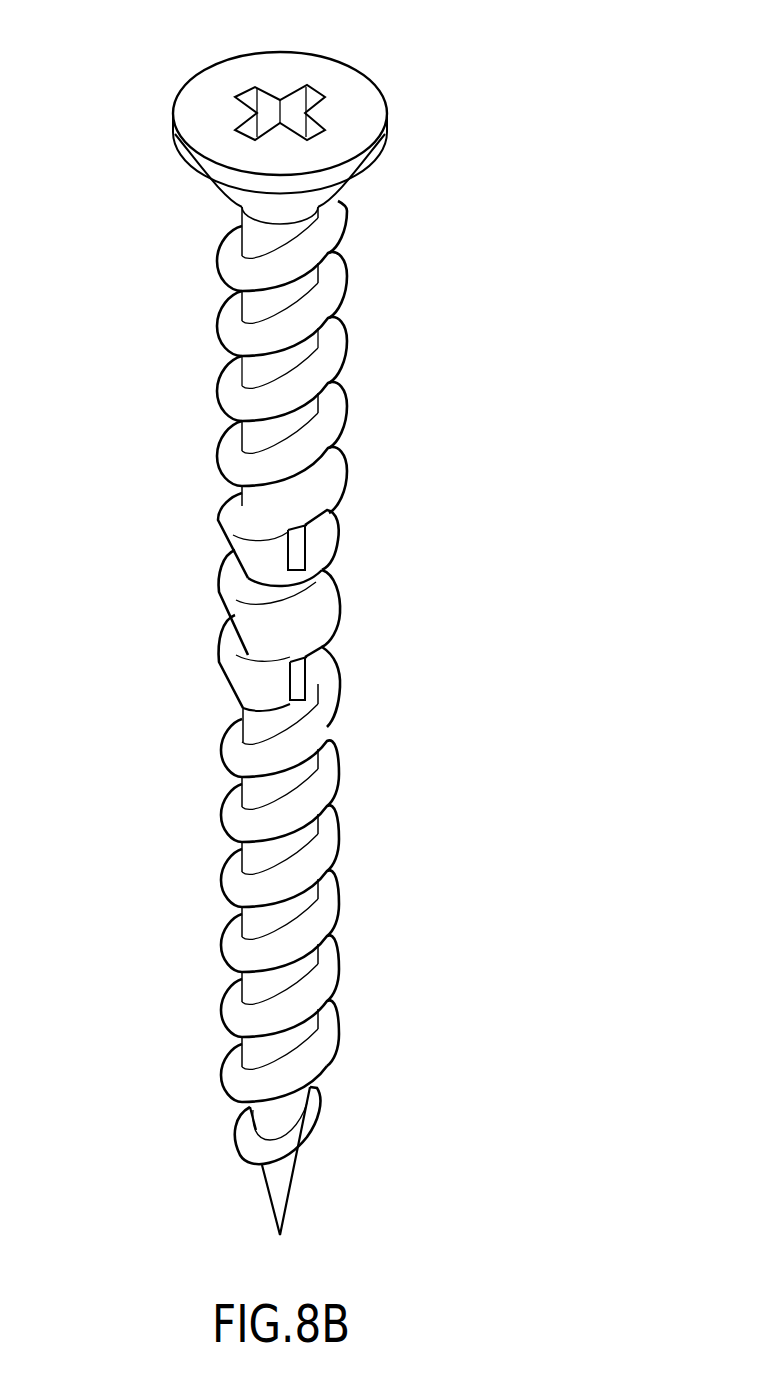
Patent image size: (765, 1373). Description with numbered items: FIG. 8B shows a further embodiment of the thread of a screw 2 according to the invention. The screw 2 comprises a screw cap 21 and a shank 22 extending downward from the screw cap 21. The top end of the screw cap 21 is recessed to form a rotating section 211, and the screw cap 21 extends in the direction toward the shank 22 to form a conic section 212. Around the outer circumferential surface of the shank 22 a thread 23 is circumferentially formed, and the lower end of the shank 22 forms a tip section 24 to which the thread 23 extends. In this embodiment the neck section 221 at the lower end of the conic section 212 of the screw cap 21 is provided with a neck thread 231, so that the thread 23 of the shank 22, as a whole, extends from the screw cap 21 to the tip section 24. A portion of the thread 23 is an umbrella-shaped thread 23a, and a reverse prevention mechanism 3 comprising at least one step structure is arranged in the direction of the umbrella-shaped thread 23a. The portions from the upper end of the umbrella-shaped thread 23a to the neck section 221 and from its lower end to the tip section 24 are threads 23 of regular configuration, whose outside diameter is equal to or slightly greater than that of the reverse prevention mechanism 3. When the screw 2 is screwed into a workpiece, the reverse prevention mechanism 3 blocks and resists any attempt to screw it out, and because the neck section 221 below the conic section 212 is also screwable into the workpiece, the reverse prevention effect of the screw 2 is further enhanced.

The screw 2 is at (437, 917).
The screw cap 21 is at (335, 80).
The rotating section 211 is at (268, 103).
The conic section 212 is at (222, 194).
The shank 22 is at (180, 488).
The neck section 221 is at (260, 375).
The thread 23 is at (225, 818).
The neck thread 231 is at (333, 277).
The umbrella-shaped thread 23a is at (330, 470).
The reverse prevention mechanism 3 is at (300, 542).
The tip section 24 is at (290, 1186).